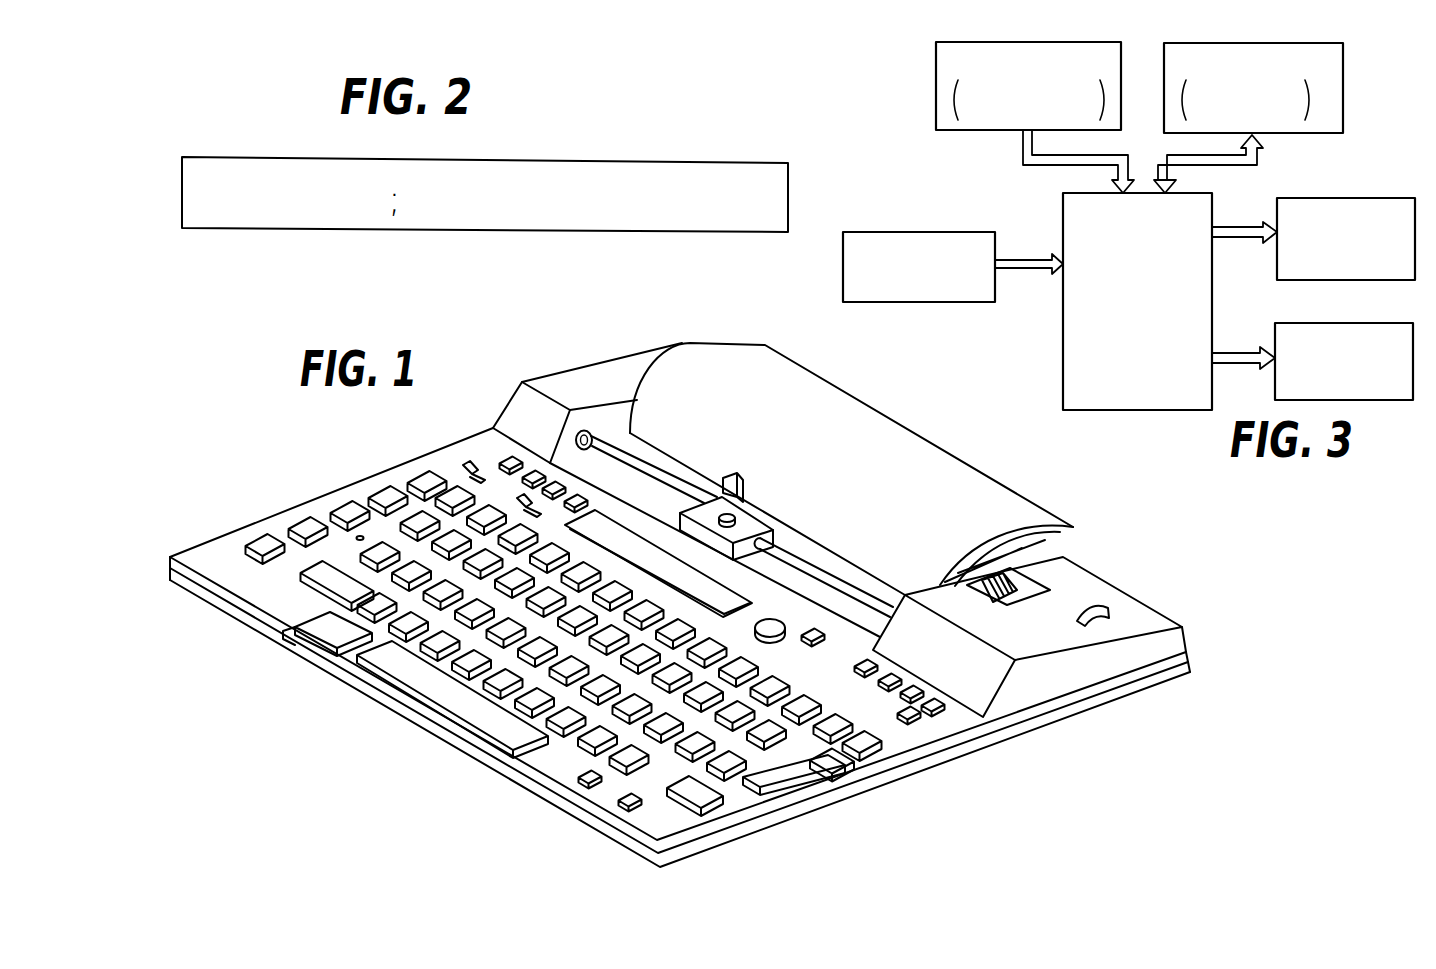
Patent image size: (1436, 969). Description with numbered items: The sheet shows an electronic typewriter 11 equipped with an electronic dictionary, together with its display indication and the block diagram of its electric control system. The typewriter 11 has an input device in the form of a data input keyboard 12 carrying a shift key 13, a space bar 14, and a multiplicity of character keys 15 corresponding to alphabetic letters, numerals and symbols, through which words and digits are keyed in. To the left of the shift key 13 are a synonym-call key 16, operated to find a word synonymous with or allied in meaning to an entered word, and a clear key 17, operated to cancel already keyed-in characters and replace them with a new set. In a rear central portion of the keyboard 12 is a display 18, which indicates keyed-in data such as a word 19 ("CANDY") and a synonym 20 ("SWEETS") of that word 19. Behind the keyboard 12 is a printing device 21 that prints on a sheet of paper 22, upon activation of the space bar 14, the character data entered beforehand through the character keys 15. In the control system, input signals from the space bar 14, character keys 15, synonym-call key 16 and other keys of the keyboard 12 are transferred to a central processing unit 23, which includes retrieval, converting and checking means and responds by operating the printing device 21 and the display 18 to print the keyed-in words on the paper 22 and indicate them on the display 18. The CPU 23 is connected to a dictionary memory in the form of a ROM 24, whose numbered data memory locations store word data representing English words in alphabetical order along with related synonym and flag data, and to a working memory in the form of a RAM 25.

In FIG. 1, the electronic typewriter 11 is at (534, 365).
In FIG. 1, the data input keyboard 12 is at (955, 735).
In FIG. 3, the shift key 13 is at (924, 247).
In FIG. 1, the shift key 13 is at (330, 578).
In FIG. 3, the space bar 14 is at (924, 247).
In FIG. 1, the space bar 14 is at (478, 713).
In FIG. 3, the character keys 15 is at (910, 238).
In FIG. 1, the character keys 15 is at (475, 614).
In FIG. 1, the synonym-call key 16 is at (262, 536).
In FIG. 1, the clear key 17 is at (303, 520).
In FIG. 2, the display 18 is at (705, 173).
In FIG. 3, the display 18 is at (1364, 207).
In FIG. 1, the display 18 is at (630, 548).
In FIG. 2, the word 19 is at (287, 187).
In FIG. 2, the synonym 20 is at (510, 187).
In FIG. 3, the printing device 21 is at (1363, 330).
In FIG. 1, the printing device 21 is at (1052, 642).
In FIG. 1, the sheet of paper 22 is at (988, 492).
In FIG. 3, the central processing unit 23 is at (1070, 347).
In FIG. 3, the ROM 24 is at (943, 62).
In FIG. 3, the RAM 25 is at (1330, 75).